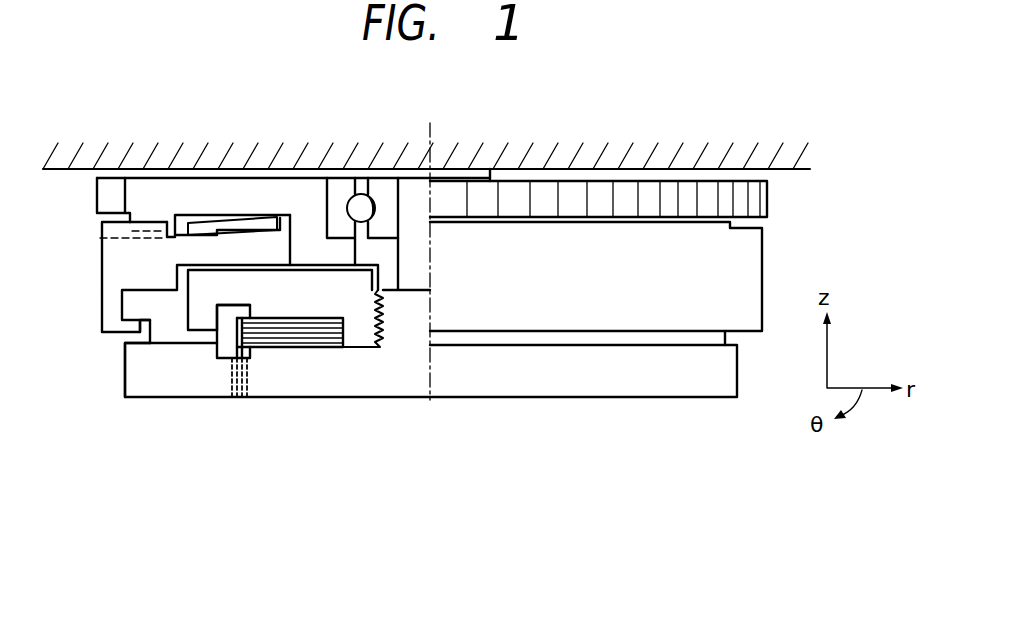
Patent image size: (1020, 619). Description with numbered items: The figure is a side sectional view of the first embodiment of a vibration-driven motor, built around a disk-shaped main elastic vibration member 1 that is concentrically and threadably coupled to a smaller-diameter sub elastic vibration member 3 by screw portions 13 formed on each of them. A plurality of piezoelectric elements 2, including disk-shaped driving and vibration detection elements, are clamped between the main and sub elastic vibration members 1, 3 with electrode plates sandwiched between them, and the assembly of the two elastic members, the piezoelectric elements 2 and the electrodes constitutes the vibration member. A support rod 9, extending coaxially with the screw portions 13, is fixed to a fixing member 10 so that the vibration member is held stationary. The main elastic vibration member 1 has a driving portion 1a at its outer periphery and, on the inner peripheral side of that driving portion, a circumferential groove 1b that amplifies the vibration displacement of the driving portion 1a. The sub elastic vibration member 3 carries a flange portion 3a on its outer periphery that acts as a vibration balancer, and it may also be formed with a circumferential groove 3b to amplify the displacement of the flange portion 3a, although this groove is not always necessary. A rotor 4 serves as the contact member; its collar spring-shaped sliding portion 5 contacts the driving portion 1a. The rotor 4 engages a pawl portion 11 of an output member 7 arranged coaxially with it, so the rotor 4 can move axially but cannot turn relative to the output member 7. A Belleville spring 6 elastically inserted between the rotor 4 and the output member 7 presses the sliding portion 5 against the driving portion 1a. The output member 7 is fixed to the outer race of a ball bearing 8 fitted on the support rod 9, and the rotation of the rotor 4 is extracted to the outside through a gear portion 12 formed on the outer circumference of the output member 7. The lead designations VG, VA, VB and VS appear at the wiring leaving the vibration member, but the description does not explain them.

The main elastic vibration member 1 is at (150, 398).
The driving portion 1a is at (147, 352).
The circumferential groove 1b is at (228, 355).
The piezoelectric elements 2 is at (320, 335).
The sub elastic vibration member 3 is at (305, 288).
The flange portion 3a is at (207, 322).
The circumferential groove 3b is at (230, 317).
The rotor 4 is at (113, 273).
The sliding portion 5 is at (138, 327).
The Belleville spring 6 is at (258, 222).
The output member 7 is at (297, 190).
The ball bearing 8 is at (340, 190).
The support rod 9 is at (412, 190).
The fixing member 10 is at (466, 167).
The pawl portion 11 is at (150, 223).
The gear portion 12 is at (108, 187).
The screw portions 13 is at (385, 328).
The ground terminal VG is at (240, 400).
The phase A terminal VA is at (240, 400).
The phase B terminal VB is at (240, 400).
The supply terminal VS is at (240, 400).